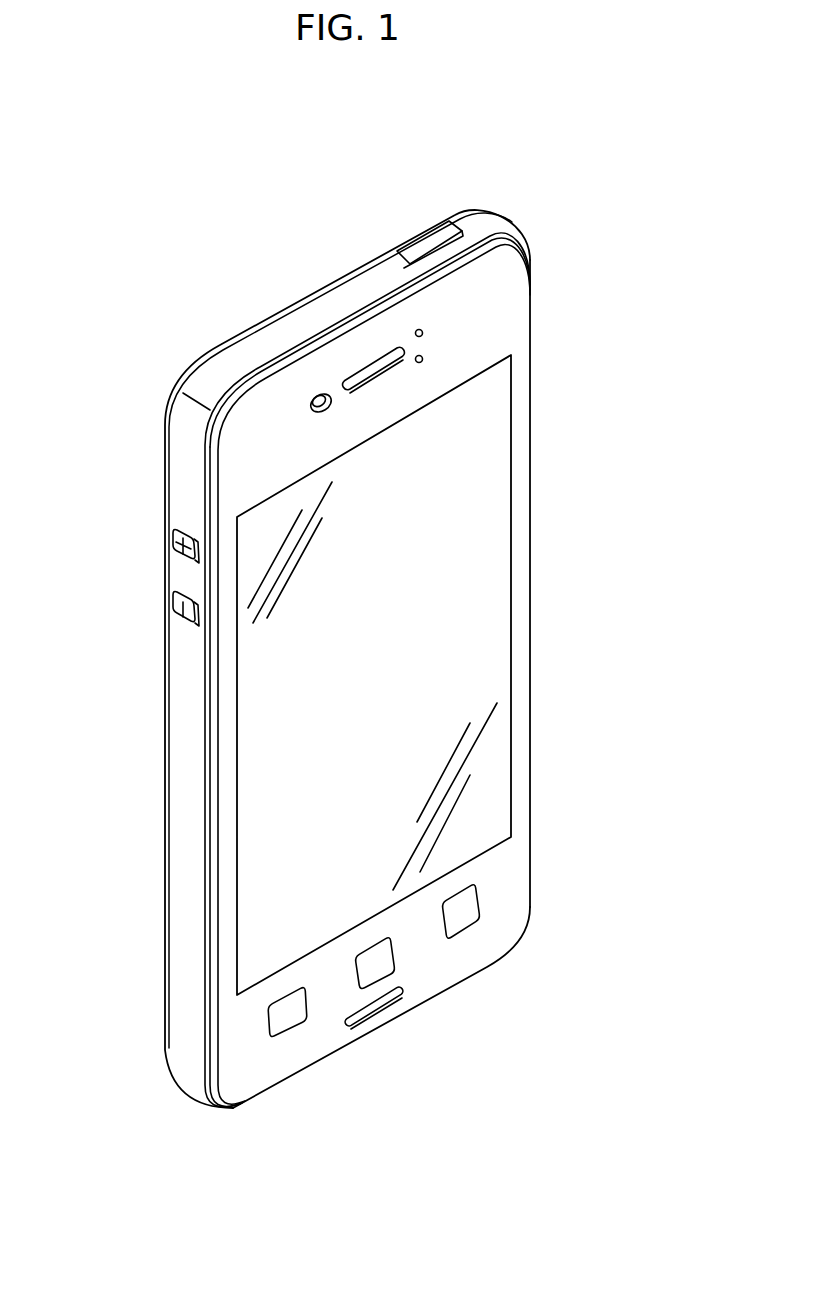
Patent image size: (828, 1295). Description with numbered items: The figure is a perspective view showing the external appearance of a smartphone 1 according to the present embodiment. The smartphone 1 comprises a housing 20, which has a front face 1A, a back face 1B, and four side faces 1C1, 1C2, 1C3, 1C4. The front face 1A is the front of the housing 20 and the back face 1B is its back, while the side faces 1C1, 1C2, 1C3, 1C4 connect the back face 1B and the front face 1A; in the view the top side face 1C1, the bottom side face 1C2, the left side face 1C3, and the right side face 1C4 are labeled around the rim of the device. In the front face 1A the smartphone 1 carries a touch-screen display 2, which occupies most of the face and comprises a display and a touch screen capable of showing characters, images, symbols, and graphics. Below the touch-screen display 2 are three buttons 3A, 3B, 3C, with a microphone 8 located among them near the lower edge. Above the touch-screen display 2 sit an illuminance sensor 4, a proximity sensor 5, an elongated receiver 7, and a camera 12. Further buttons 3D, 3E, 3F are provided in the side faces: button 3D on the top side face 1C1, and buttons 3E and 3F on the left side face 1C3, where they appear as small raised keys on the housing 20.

The smartphone 1 is at (645, 283).
The front face 1A is at (258, 407).
The back face 1B is at (165, 460).
The side face 1C1 is at (360, 283).
The side face 1C2 is at (435, 1005).
The side face 1C3 is at (185, 851).
The side face 1C4 is at (533, 470).
The touch-screen display 2 is at (493, 657).
The button 3A is at (290, 1017).
The button 3B is at (377, 970).
The button 3C is at (462, 912).
The button 3D is at (433, 242).
The button 3E is at (173, 553).
The button 3F is at (173, 613).
The illuminance sensor 4 is at (419, 329).
The proximity sensor 5 is at (424, 358).
The receiver 7 is at (363, 372).
The microphone 8 is at (363, 1013).
The camera 12 is at (317, 391).
The housing 20 is at (180, 490).